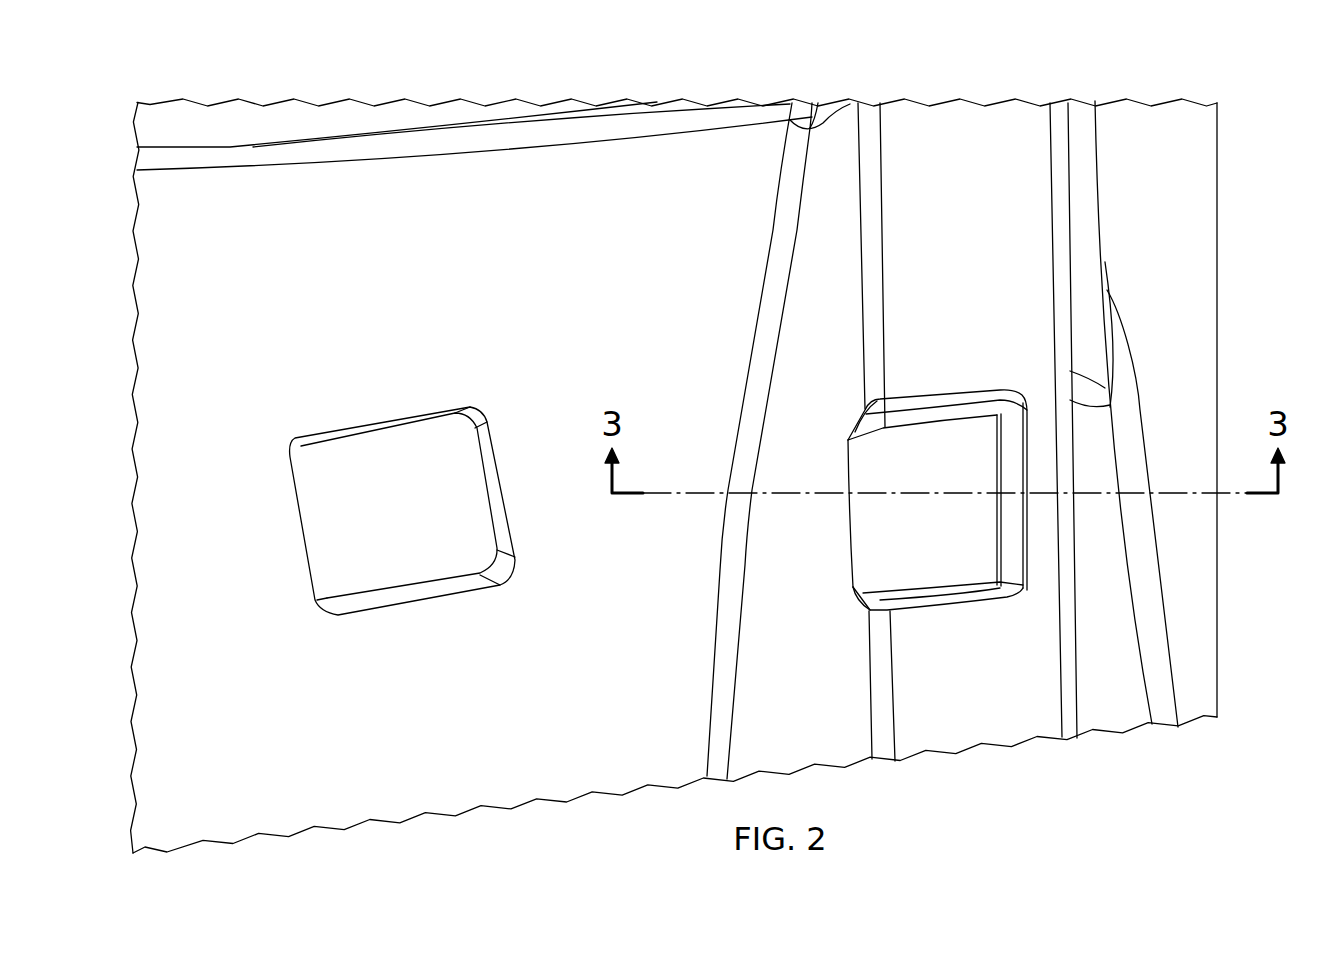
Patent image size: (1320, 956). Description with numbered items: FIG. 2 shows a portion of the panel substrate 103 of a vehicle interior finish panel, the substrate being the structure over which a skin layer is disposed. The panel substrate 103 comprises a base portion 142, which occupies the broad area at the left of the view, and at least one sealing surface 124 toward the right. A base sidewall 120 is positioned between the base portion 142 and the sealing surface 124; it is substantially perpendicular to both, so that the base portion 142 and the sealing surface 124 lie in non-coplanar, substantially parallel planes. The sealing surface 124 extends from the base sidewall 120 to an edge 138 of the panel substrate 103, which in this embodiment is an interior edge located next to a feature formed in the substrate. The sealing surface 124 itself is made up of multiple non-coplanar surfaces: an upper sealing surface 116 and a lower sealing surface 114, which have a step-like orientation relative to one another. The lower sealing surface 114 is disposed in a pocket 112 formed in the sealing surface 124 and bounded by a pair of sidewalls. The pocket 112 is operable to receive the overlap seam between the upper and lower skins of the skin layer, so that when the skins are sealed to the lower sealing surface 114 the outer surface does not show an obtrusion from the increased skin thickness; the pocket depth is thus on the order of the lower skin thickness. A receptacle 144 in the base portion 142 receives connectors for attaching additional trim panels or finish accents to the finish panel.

The panel substrate 103 is at (677, 89).
The pocket 112 is at (937, 478).
The lower sealing surface 114 is at (931, 559).
The upper sealing surface 116 is at (1033, 197).
The base sidewall 120 is at (753, 602).
The sealing surface 124 is at (1001, 399).
The edge 138 is at (1072, 255).
The base portion 142 is at (373, 185).
The receptacle 144 is at (387, 417).